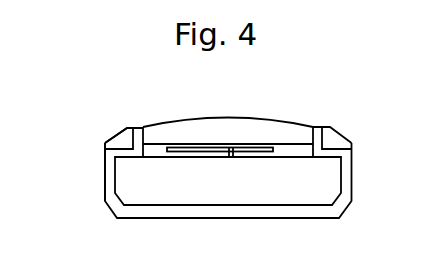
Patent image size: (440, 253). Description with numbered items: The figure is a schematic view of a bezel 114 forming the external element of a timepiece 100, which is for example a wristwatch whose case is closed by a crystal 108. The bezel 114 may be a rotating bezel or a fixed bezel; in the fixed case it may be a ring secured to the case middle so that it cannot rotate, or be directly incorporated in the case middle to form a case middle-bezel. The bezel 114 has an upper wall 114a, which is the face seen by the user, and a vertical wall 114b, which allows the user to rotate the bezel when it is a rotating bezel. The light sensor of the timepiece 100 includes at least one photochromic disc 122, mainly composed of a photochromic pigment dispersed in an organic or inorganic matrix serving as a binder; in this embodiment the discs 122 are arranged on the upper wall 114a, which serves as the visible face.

The timepiece 100 is at (225, 139).
The crystal 108 is at (262, 127).
The bezel 114 is at (186, 151).
The upper wall 114a is at (106, 138).
The vertical wall 114b is at (104, 145).
The photochromic disc 122 is at (109, 124).